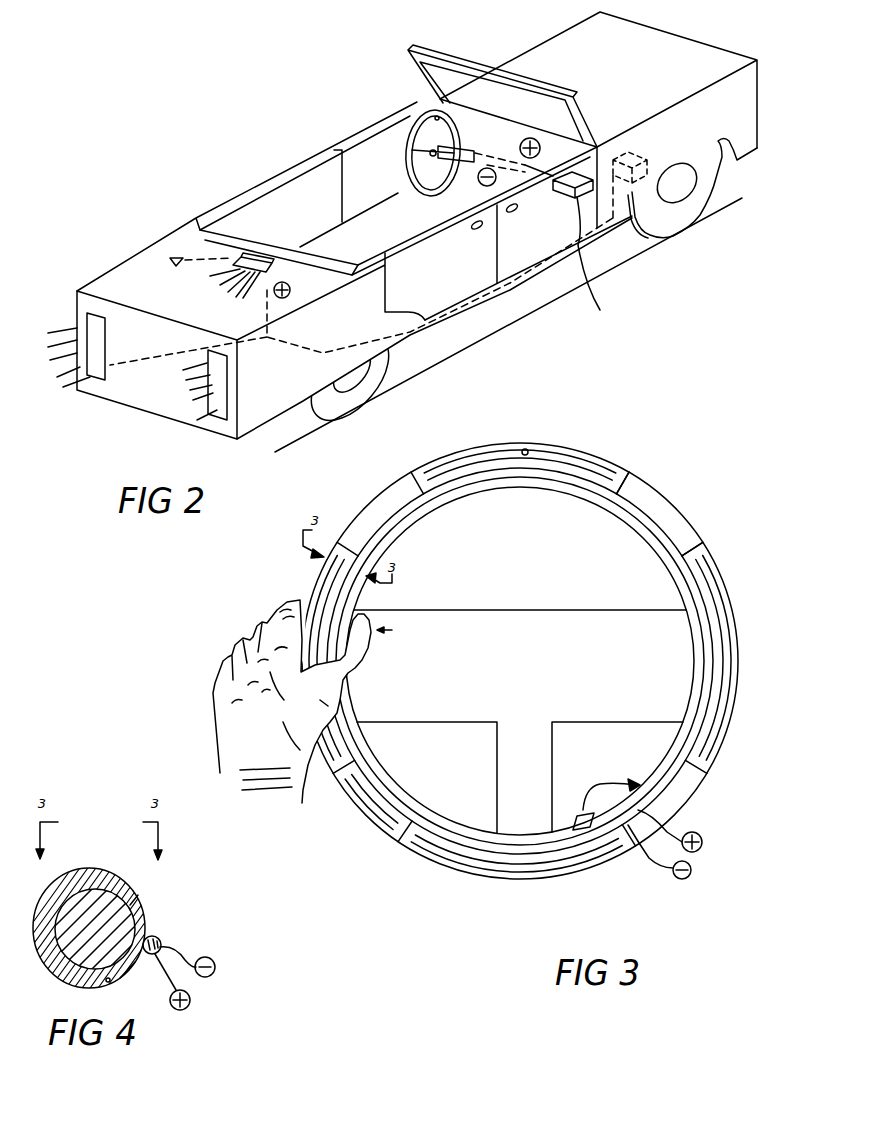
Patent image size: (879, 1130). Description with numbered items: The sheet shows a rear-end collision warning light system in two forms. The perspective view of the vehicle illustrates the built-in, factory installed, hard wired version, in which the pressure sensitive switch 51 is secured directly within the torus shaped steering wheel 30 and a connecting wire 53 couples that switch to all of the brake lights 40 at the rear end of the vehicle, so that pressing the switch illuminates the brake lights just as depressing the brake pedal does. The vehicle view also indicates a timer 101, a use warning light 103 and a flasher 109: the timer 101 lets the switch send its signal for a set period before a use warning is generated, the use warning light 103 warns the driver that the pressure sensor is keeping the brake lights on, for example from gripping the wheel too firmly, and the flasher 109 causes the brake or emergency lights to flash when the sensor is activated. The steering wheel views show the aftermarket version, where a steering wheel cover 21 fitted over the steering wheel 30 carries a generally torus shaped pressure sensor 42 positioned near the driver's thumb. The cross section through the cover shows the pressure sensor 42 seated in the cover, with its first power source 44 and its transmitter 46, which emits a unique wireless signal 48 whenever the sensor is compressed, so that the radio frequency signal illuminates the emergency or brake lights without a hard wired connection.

In FIG. 3, the steering wheel cover 21 is at (720, 747).
In FIG. 4, the steering wheel cover 21 is at (144, 887).
In FIG. 2, the steering wheel 30 is at (423, 112).
In FIG. 3, the steering wheel 30 is at (393, 513).
In FIG. 4, the steering wheel 30 is at (137, 924).
In FIG. 2, the brake lights 40 is at (80, 291).
In FIG. 3, the pressure sensor 42 is at (663, 537).
In FIG. 4, the pressure sensor 42 is at (161, 939).
In FIG. 4, the first power source 44 is at (214, 975).
In FIG. 3, the transmitter 46 is at (590, 830).
In FIG. 3, the unique wireless signal 48 is at (684, 800).
In FIG. 2, the pressure sensitive switch 51 is at (440, 115).
In FIG. 2, the connecting wire 53 is at (487, 152).
In FIG. 2, the timer 101 is at (590, 197).
In FIG. 2, the use warning light 103 is at (432, 103).
In FIG. 3, the use warning light 103 is at (530, 452).
In FIG. 2, the flasher 109 is at (586, 256).